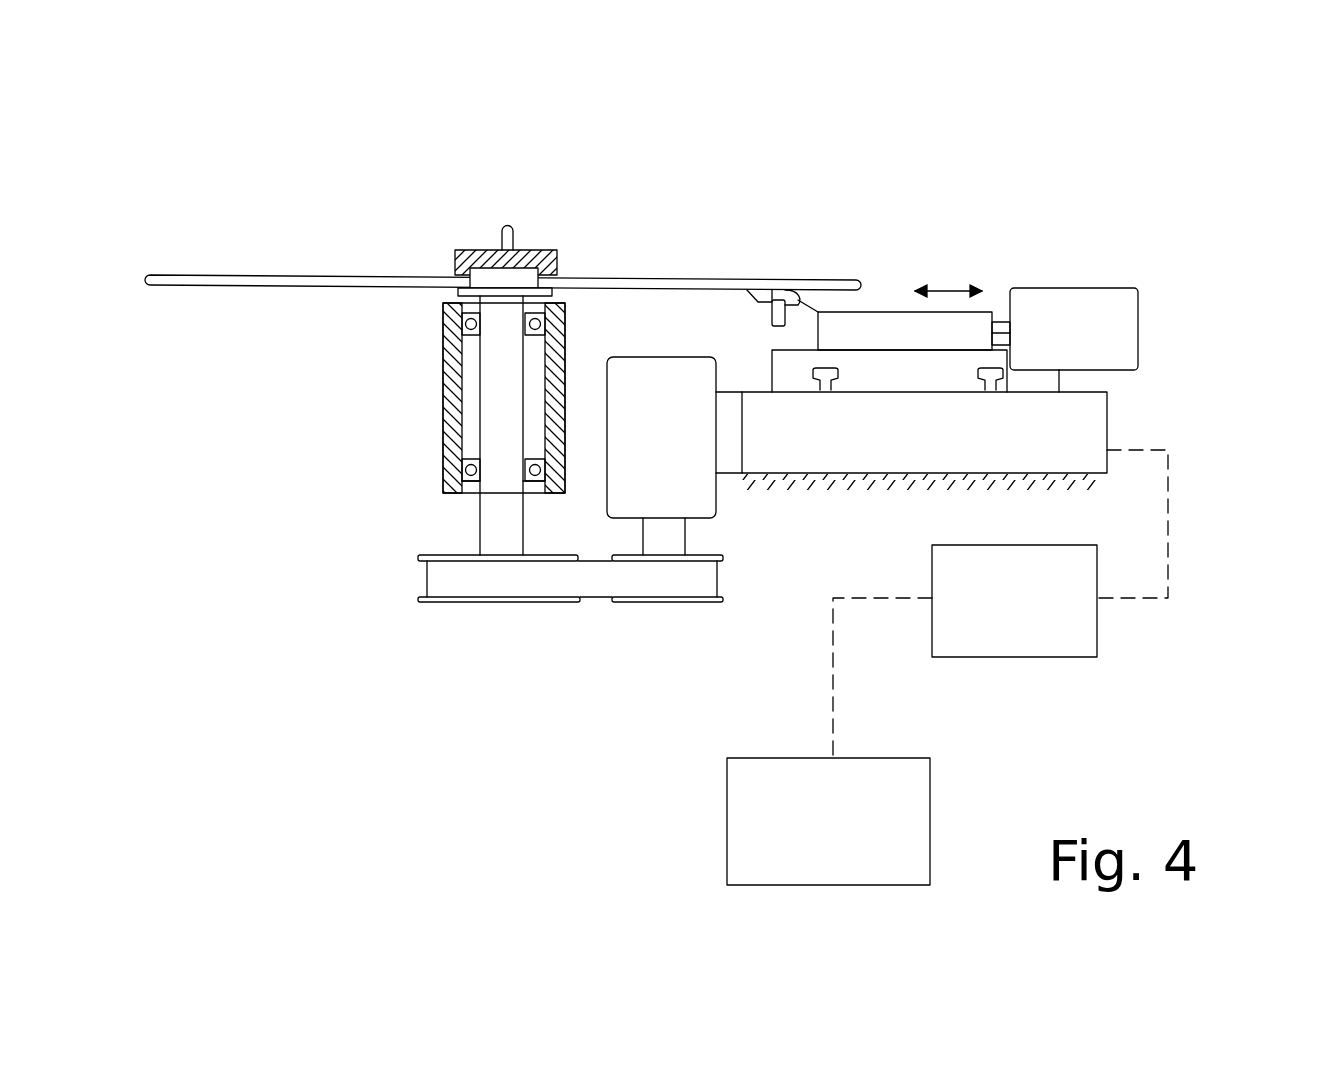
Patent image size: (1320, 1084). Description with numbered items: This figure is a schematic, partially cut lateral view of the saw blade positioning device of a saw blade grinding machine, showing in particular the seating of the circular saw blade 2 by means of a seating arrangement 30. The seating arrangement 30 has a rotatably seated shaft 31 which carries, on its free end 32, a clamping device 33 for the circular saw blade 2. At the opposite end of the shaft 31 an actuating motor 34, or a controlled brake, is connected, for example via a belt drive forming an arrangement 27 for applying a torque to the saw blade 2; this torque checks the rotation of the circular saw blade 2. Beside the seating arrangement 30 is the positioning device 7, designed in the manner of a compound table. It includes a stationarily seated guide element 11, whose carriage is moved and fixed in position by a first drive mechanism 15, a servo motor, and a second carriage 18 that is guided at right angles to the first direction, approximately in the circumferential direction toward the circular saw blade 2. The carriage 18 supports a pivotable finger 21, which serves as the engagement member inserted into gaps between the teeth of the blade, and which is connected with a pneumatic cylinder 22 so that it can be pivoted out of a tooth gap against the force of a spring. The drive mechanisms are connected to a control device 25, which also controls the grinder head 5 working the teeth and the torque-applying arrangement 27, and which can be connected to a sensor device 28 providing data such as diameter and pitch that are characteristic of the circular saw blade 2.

The circular saw blade 2 is at (668, 276).
The grinder head 5 is at (1123, 239).
The positioning device 7 is at (1034, 258).
The guide element 11 is at (1078, 445).
The first drive mechanism 15 is at (907, 364).
The carriage 18 is at (886, 325).
The finger 21 is at (773, 300).
The pneumatic cylinder 22 is at (768, 321).
The control device 25 is at (1040, 620).
The arrangement for applying a torque 27 is at (643, 617).
The sensor device 28 is at (860, 850).
The seating arrangement 30 is at (422, 426).
The shaft 31 is at (492, 516).
The free end 32 is at (502, 316).
The clamping device 33 is at (535, 236).
The actuating motor 34 is at (700, 487).